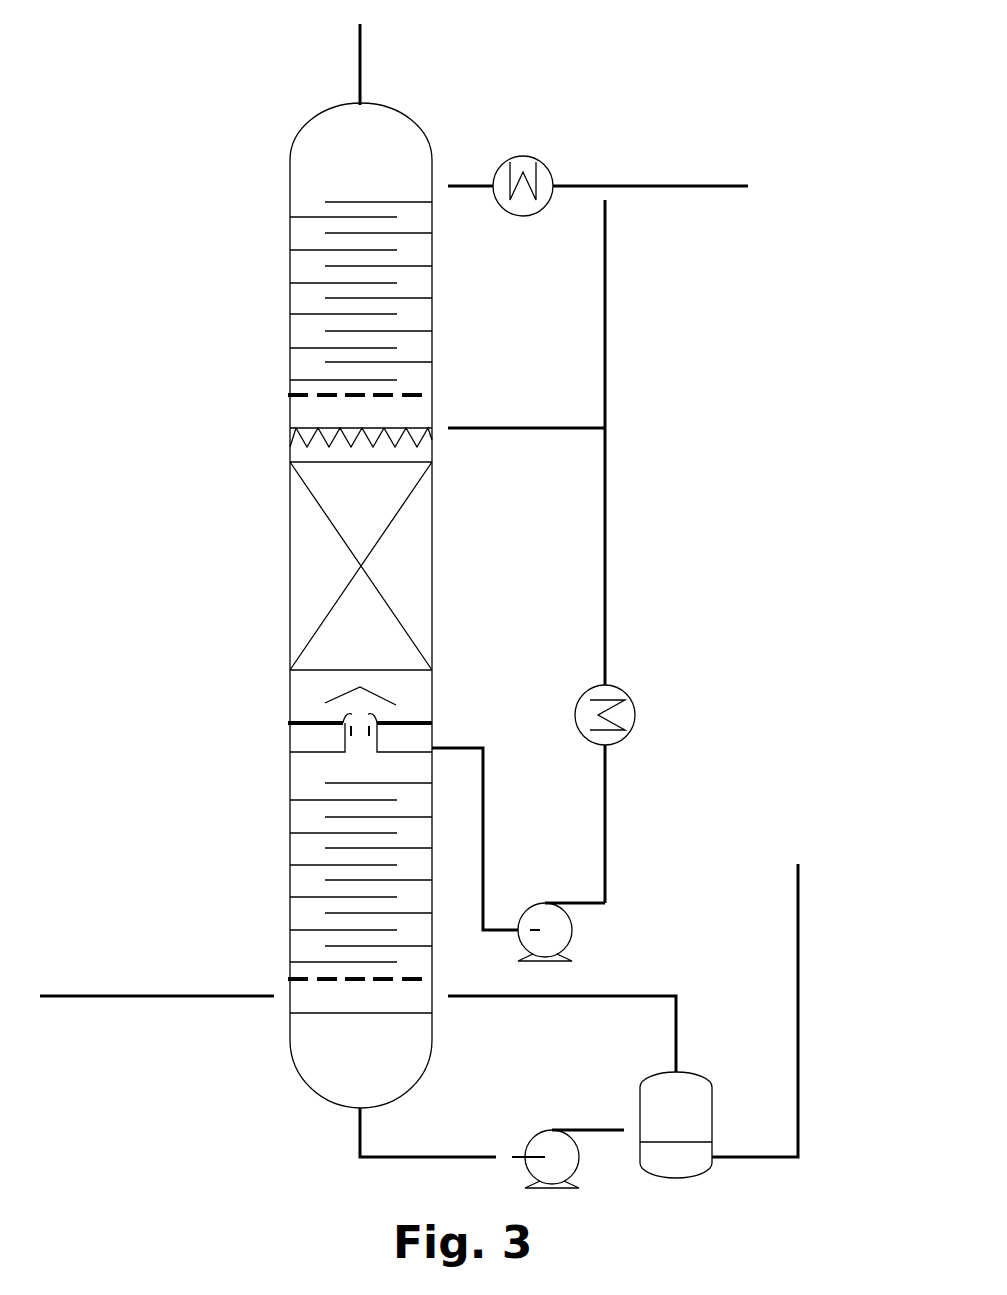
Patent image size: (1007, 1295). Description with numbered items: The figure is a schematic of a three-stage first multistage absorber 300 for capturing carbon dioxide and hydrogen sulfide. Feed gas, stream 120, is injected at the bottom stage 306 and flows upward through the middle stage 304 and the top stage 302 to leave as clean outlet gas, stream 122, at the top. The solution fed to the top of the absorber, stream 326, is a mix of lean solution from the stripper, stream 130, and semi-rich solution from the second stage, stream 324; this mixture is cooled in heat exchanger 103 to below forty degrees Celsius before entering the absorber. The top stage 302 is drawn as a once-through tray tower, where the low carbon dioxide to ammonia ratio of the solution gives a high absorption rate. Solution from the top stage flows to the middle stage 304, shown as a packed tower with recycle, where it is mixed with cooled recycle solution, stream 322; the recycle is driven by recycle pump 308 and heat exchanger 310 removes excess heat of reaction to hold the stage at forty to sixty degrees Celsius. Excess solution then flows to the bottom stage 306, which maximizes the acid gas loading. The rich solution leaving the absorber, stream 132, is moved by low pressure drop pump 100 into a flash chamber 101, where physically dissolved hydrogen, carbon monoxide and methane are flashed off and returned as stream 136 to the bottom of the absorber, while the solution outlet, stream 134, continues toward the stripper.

The absorber 300 is at (290, 153).
The top stage 302 is at (290, 300).
The middle stage 304 is at (290, 570).
The bottom stage 306 is at (290, 838).
The recycle pump 308 is at (540, 902).
The heat exchanger 310 is at (636, 711).
The recycle stream 322 is at (516, 425).
The semi-rich solution stream 324 is at (605, 355).
The top feed solution stream 326 is at (440, 172).
The heat exchanger 103 is at (520, 156).
The lean solution stream 130 is at (700, 184).
The clean outlet gas stream 122 is at (360, 62).
The feed gas stream 120 is at (150, 998).
The flash gas stream 136 is at (520, 1000).
The low pressure drop pump 100 is at (516, 1192).
The rich solution stream 132 is at (590, 1128).
The flash chamber 101 is at (714, 1080).
The solution outlet stream 134 is at (798, 928).